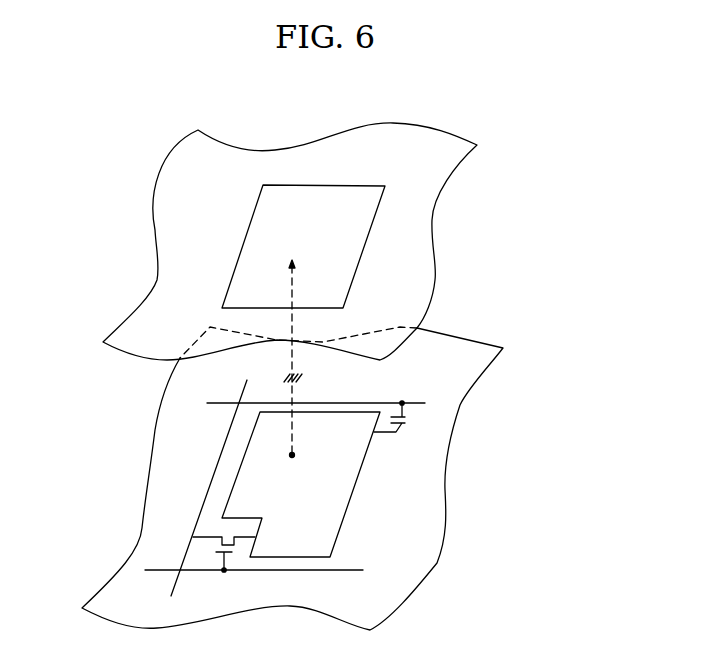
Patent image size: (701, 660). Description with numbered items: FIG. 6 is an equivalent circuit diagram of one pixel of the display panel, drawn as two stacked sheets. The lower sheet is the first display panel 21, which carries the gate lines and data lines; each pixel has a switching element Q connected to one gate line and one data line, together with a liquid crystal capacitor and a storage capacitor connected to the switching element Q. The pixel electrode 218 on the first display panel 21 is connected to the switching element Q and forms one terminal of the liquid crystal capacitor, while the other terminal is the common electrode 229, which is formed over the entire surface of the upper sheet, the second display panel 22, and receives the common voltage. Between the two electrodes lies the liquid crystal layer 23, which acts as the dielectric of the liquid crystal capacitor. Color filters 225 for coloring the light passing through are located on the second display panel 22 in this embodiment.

The first display panel 21 is at (299, 478).
The second display panel 22 is at (302, 290).
The liquid crystal layer 23 is at (100, 412).
The pixel electrode 218 is at (342, 522).
The color filters 225 is at (363, 256).
The common electrode 229 is at (432, 225).